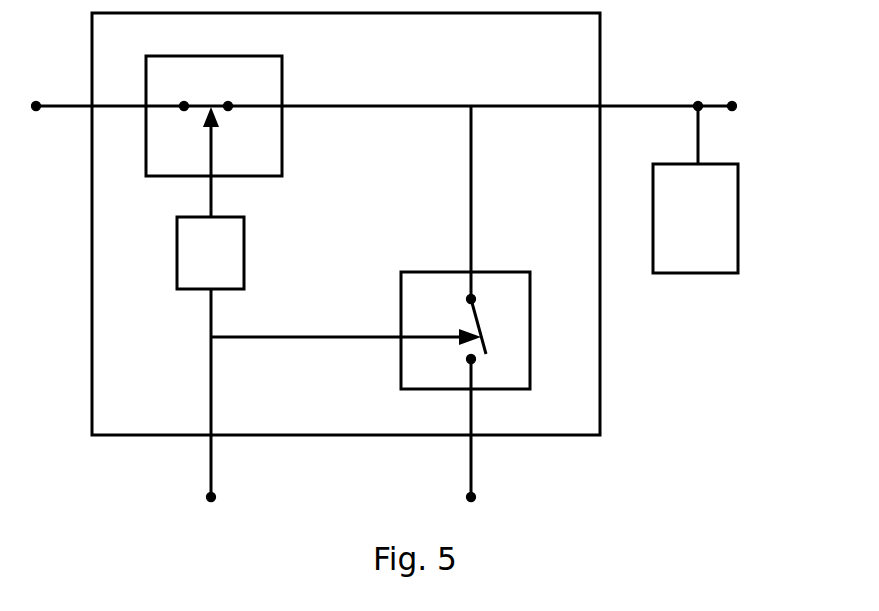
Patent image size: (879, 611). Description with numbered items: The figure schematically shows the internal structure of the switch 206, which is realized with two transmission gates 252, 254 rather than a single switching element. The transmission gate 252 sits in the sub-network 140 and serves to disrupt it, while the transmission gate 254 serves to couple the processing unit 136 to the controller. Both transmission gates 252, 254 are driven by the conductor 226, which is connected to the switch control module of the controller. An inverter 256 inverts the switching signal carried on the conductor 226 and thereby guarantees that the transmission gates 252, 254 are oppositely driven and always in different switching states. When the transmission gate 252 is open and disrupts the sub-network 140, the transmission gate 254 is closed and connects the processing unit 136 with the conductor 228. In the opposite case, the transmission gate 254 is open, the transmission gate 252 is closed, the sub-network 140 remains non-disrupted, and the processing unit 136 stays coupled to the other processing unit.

The switch 206 is at (517, 435).
The sub-network 140 is at (48, 107).
The transmission gate 252 is at (283, 146).
The inverter 256 is at (244, 252).
The transmission gate 254 is at (497, 272).
The conductor 226 is at (218, 498).
The conductor 228 is at (466, 496).
The processing unit 136 is at (735, 197).